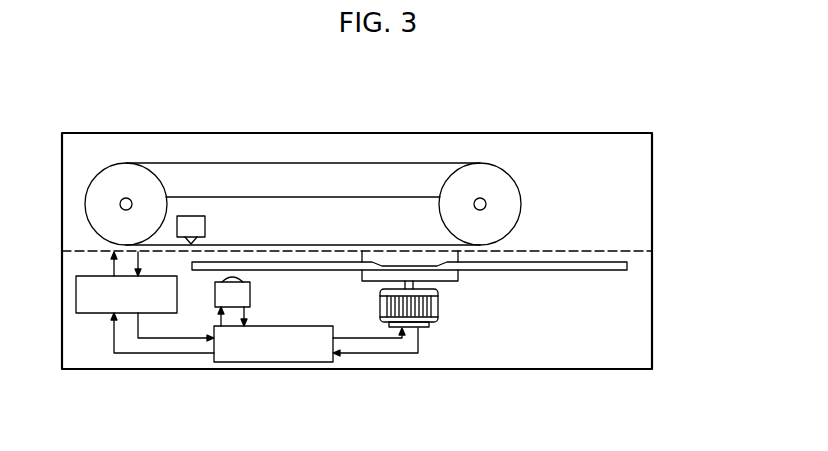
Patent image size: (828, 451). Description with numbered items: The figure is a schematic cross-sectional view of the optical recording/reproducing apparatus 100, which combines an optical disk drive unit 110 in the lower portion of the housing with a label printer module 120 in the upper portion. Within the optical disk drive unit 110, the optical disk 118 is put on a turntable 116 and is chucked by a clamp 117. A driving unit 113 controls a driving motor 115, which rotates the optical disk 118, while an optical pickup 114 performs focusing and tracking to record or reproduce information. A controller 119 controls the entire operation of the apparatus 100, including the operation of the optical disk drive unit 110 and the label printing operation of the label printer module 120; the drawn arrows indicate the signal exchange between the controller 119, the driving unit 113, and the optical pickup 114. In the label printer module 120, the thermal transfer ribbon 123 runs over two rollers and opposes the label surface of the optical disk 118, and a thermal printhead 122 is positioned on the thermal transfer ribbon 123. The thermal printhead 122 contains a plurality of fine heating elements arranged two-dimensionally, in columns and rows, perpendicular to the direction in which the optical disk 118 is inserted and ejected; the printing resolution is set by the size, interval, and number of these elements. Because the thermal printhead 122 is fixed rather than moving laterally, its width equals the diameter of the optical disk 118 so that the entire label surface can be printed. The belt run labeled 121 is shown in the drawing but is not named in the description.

The optical recording/reproducing apparatus 100 is at (384, 413).
The optical disk drive unit 110 is at (652, 318).
The driving unit 113 is at (254, 362).
The optical pickup 114 is at (215, 294).
The driving motor 115 is at (410, 310).
The turntable 116 is at (440, 273).
The clamp 117 is at (407, 257).
The optical disk 118 is at (620, 266).
The controller 119 is at (106, 313).
The label printer module 120 is at (652, 185).
The transfer belt 121 is at (305, 178).
The thermal printhead 122 is at (198, 216).
The thermal transfer ribbon 123 is at (352, 245).